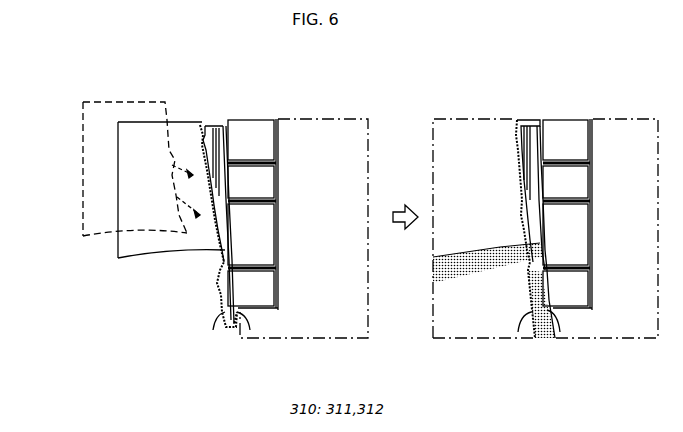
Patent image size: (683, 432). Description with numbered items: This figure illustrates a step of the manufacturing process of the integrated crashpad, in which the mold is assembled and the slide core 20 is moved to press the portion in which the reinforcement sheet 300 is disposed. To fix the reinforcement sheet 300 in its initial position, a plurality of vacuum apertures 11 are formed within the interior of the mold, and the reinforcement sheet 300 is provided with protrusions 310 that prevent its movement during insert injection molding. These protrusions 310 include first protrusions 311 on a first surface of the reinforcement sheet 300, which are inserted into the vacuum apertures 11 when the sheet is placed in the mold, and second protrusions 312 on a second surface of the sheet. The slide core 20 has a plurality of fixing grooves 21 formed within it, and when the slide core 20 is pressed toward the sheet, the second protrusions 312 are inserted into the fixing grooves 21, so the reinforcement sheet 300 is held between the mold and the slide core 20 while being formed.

The vacuum apertures 11 is at (233, 160).
The slide core 20 is at (155, 252).
The fixing grooves 21 is at (175, 192).
The reinforcement sheet 300 is at (225, 312).
The protrusions 310 is at (308, 225).
The first protrusions 311 is at (208, 122).
The second protrusions 312 is at (205, 137).